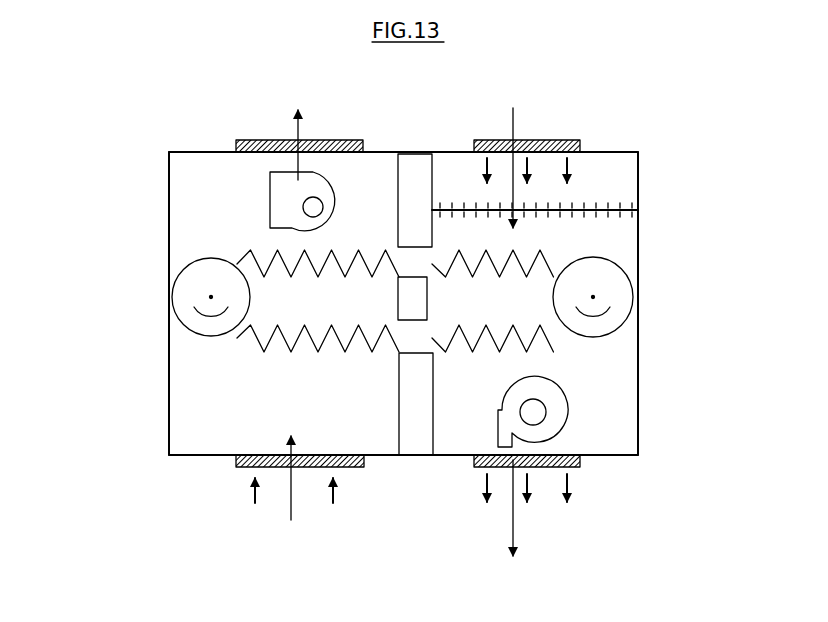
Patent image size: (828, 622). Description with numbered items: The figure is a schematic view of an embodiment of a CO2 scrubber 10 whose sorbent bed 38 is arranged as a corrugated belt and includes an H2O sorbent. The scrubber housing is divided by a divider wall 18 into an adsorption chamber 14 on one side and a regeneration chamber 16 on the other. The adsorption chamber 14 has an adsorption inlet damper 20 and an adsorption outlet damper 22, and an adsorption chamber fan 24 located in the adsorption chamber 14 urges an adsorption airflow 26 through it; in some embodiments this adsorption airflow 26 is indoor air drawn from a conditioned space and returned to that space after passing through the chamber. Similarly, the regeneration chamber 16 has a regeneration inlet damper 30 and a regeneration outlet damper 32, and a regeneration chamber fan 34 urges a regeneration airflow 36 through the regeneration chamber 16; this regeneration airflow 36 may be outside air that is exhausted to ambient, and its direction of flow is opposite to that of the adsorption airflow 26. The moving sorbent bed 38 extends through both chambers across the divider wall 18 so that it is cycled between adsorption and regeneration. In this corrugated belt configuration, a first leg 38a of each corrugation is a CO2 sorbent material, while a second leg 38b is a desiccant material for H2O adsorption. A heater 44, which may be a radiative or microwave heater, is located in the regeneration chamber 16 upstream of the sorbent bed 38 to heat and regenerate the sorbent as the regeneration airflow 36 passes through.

The CO2 scrubber 10 is at (125, 135).
The adsorption chamber 14 is at (210, 393).
The regeneration chamber 16 is at (602, 384).
The divider wall 18 is at (408, 438).
The adsorption inlet damper 20 is at (242, 466).
The adsorption outlet damper 22 is at (238, 138).
The adsorption chamber fan 24 is at (296, 223).
The adsorption airflow 26 is at (293, 135).
The regeneration inlet damper 30 is at (480, 138).
The regeneration outlet damper 32 is at (580, 466).
The regeneration chamber fan 34 is at (531, 425).
The regeneration airflow 36 is at (516, 125).
The sorbent bed 38 is at (363, 309).
The first leg 38a is at (348, 342).
The second leg 38b is at (309, 265).
The heater 44 is at (638, 178).